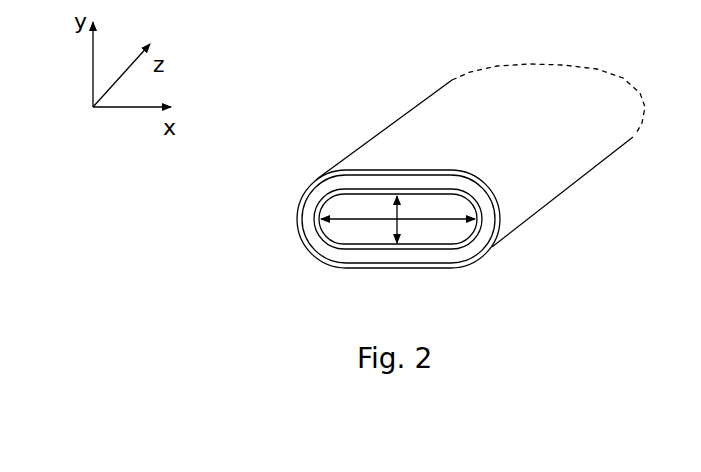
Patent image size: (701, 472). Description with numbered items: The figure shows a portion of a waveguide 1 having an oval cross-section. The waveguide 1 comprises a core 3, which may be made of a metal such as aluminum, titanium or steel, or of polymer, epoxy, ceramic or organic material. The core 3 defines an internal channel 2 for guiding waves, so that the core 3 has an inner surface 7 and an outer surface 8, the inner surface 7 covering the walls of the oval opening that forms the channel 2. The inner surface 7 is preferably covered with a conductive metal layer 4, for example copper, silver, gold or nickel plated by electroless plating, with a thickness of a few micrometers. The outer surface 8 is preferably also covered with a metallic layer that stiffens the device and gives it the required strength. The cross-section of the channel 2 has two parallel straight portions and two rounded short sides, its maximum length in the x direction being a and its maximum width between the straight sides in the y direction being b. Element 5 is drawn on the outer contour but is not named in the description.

The waveguide 1 is at (224, 338).
The internal channel 2 is at (362, 216).
The core 3 is at (306, 222).
The conductive metal layer 4 is at (384, 210).
The outer wall 5 is at (300, 203).
The inner surface 7 is at (423, 231).
The outer surface 8 is at (440, 116).